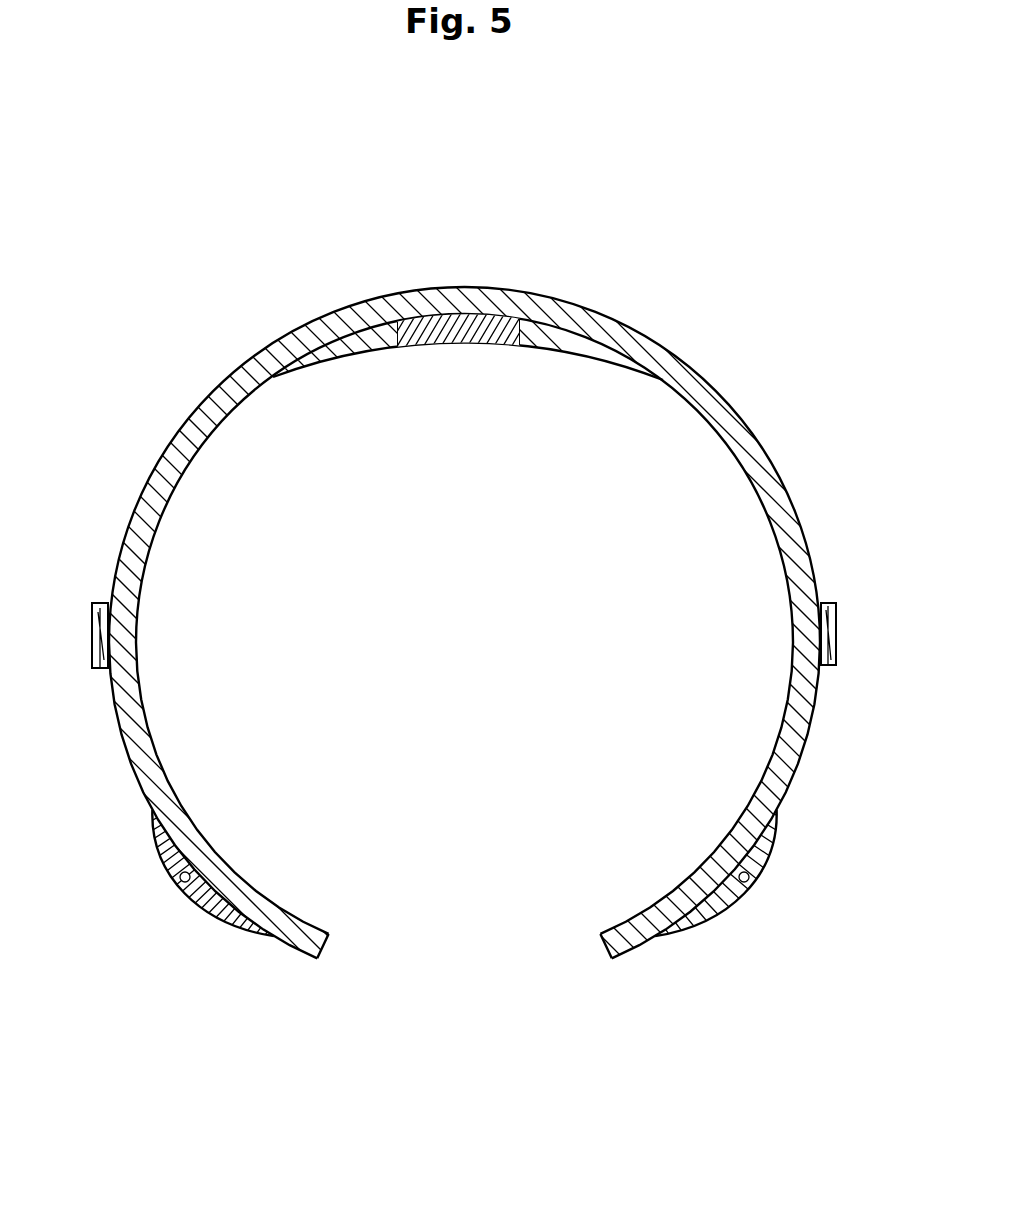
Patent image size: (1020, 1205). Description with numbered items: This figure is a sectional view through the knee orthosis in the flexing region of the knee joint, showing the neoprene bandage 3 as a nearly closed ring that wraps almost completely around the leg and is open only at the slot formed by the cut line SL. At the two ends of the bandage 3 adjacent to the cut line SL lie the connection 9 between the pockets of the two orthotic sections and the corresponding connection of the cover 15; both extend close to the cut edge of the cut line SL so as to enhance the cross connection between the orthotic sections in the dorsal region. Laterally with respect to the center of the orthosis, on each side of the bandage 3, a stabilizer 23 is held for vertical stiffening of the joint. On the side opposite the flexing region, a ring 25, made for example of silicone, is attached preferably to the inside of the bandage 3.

The bandage 3 is at (702, 377).
The ring 25 is at (548, 337).
The stabilizer 23 is at (96, 603).
The cover 15 is at (182, 895).
The connection 9 is at (742, 887).
The cut line SL is at (330, 953).